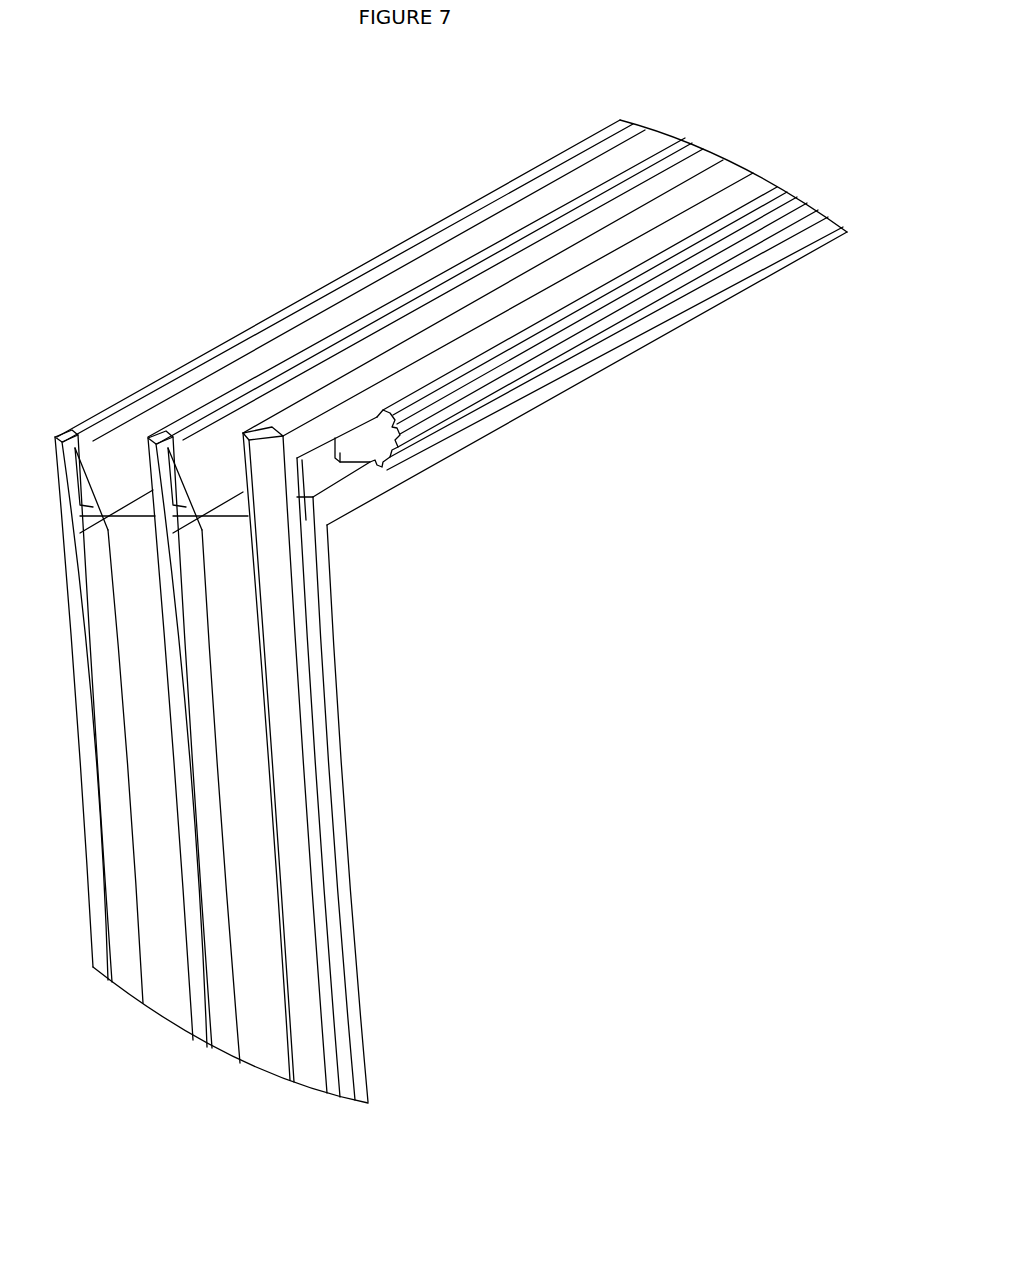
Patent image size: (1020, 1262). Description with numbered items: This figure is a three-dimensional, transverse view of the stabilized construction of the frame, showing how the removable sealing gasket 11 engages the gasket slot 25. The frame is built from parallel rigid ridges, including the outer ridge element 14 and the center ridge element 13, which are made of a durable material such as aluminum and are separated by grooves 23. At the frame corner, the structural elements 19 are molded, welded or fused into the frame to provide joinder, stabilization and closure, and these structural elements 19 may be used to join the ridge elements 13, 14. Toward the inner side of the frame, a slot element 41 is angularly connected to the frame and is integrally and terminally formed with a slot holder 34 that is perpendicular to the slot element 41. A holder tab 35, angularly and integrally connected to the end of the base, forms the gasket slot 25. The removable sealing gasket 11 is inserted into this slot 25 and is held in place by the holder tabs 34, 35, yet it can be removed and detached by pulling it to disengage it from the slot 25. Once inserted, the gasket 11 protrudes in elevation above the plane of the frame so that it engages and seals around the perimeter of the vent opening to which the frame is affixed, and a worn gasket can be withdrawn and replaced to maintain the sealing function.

The removable sealing gasket 11 is at (740, 268).
The center ridge element 13 is at (183, 840).
The outer ridge element 14 is at (105, 890).
The structural elements 19 is at (82, 535).
The grooves 23 is at (147, 741).
The gasket slot 25 is at (327, 468).
The slot holder 34 is at (553, 382).
The holder tab 35 is at (438, 368).
The slot element 41 is at (297, 804).